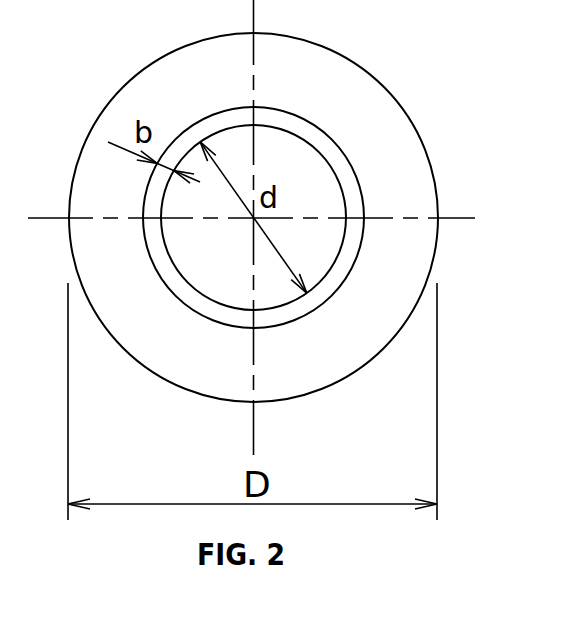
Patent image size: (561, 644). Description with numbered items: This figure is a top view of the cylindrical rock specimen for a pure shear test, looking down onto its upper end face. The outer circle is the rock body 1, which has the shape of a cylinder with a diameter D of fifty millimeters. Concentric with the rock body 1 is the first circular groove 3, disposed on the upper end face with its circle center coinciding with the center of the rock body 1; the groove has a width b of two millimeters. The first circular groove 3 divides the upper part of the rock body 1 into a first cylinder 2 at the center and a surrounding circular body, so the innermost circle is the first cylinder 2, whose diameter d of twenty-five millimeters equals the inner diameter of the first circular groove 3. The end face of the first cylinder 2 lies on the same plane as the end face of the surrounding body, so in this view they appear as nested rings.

The rock body 1 is at (363, 130).
The first cylinder 2 is at (275, 177).
The first circular groove 3 is at (342, 178).